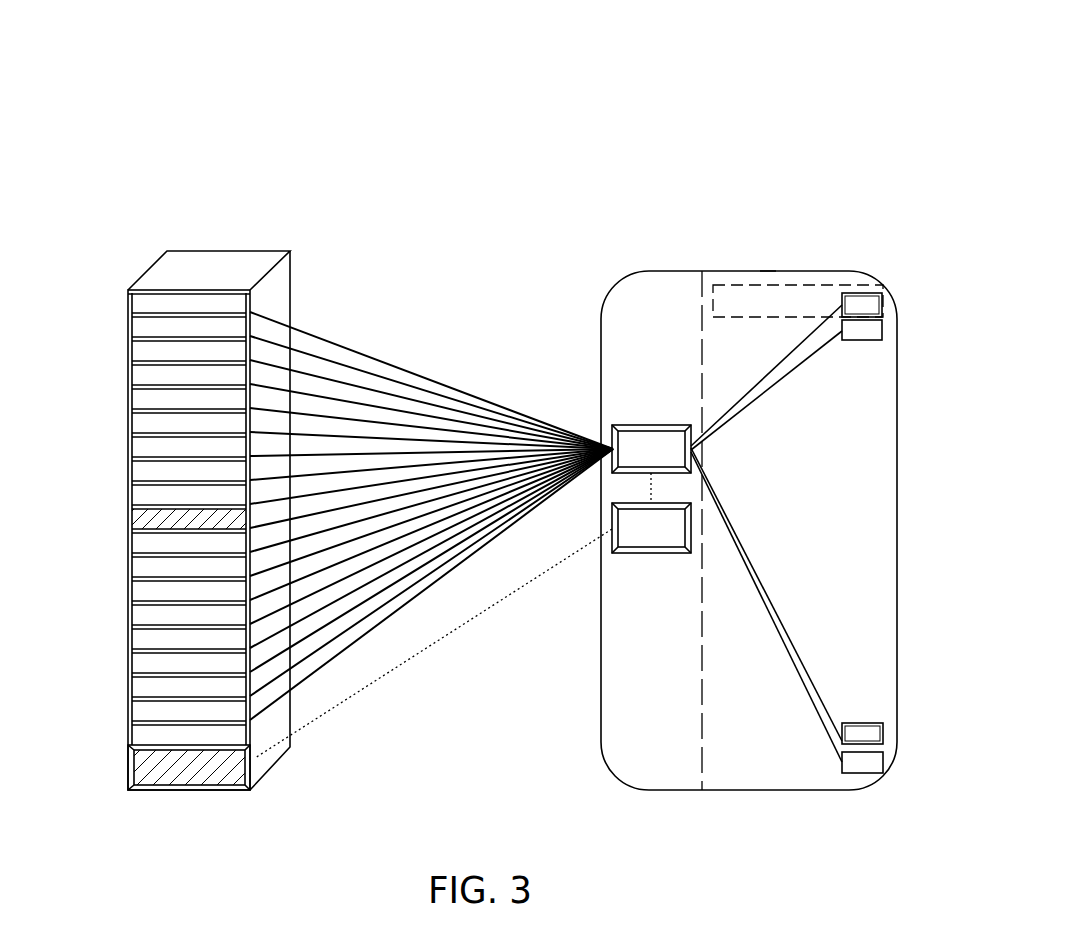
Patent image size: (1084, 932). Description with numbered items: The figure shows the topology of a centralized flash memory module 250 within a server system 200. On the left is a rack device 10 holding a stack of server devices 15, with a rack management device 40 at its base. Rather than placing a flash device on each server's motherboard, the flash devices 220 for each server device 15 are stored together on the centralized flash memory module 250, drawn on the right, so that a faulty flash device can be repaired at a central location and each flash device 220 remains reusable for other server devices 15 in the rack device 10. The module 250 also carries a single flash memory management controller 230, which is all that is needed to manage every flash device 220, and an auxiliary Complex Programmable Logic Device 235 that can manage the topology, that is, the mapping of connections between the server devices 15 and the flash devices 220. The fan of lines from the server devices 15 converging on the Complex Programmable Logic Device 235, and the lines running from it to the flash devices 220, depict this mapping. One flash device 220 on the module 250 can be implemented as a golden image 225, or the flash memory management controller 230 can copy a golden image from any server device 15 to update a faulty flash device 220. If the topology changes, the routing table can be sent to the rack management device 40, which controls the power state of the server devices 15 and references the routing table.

The rack device 10 is at (234, 251).
The server device 15 is at (246, 300).
The centralized flash memory module 250 is at (138, 513).
The rack management device 40 is at (218, 775).
The server system 200 is at (808, 72).
The golden image 225 is at (838, 289).
The flash device 220 is at (875, 306).
The Complex Programmable Logic Device 235 is at (620, 436).
The flash memory management controller 230 is at (626, 532).